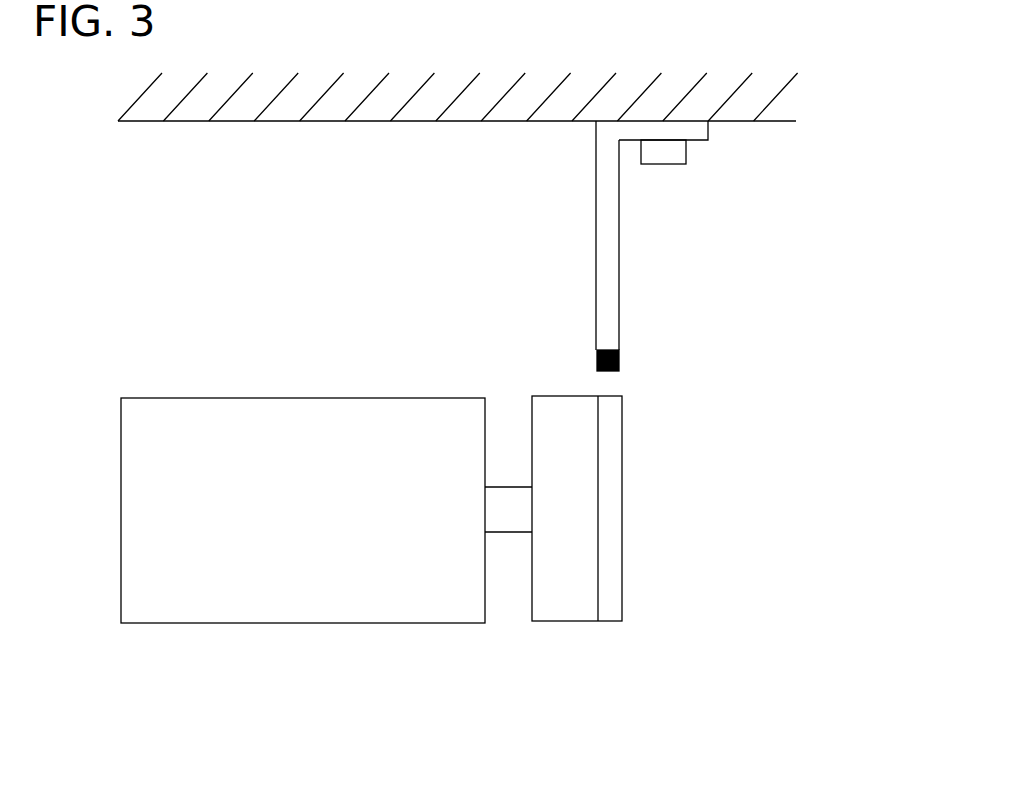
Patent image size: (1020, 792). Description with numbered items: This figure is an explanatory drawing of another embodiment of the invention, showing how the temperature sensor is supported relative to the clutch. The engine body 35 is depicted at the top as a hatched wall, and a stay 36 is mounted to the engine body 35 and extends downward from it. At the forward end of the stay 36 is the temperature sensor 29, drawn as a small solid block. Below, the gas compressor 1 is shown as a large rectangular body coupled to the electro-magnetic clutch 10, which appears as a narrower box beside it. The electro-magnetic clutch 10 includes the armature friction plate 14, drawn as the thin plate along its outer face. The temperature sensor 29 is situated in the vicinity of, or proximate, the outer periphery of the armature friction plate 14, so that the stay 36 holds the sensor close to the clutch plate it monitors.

The engine body 35 is at (392, 95).
The stay 36 is at (609, 258).
The temperature sensor 29 is at (620, 362).
The gas compressor 1 is at (304, 578).
The electro-magnetic clutch 10 is at (553, 598).
The armature friction plate 14 is at (600, 598).